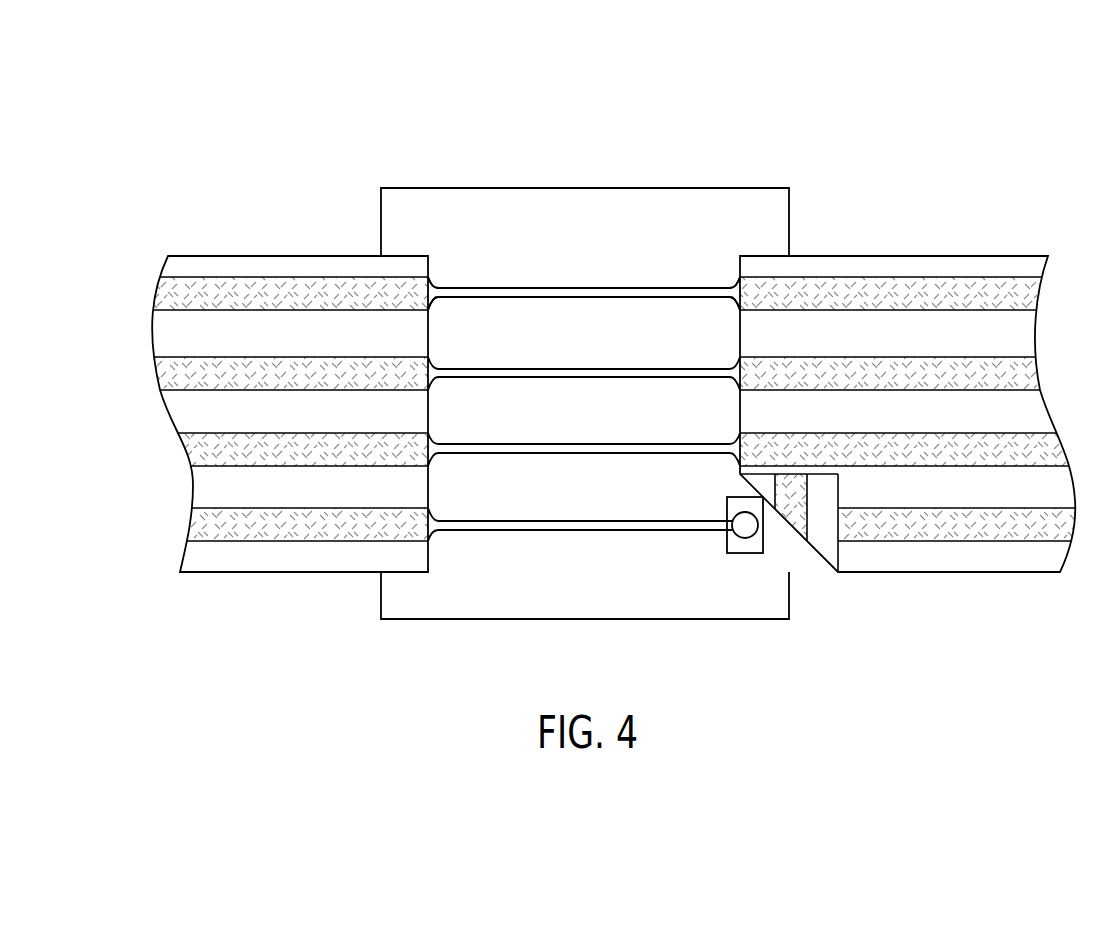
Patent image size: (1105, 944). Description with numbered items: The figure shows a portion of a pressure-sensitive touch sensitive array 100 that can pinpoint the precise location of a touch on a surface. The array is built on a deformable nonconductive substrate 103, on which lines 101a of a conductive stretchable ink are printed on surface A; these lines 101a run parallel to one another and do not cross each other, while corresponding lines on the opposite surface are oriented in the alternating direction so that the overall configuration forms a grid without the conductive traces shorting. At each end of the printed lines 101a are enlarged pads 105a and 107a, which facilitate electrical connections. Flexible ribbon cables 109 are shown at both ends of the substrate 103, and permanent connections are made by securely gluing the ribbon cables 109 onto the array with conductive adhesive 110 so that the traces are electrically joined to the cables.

The touch sensitive array 100 is at (124, 126).
The flexible ribbon cable 109 is at (302, 234).
The conductive lines on surface A 101a is at (565, 534).
The deformable nonconductive substrate 103 is at (455, 605).
The enlarged pad on surface A 105a is at (436, 283).
The enlarged pad on surface A 107a is at (734, 283).
The conductive adhesive 110 is at (745, 557).